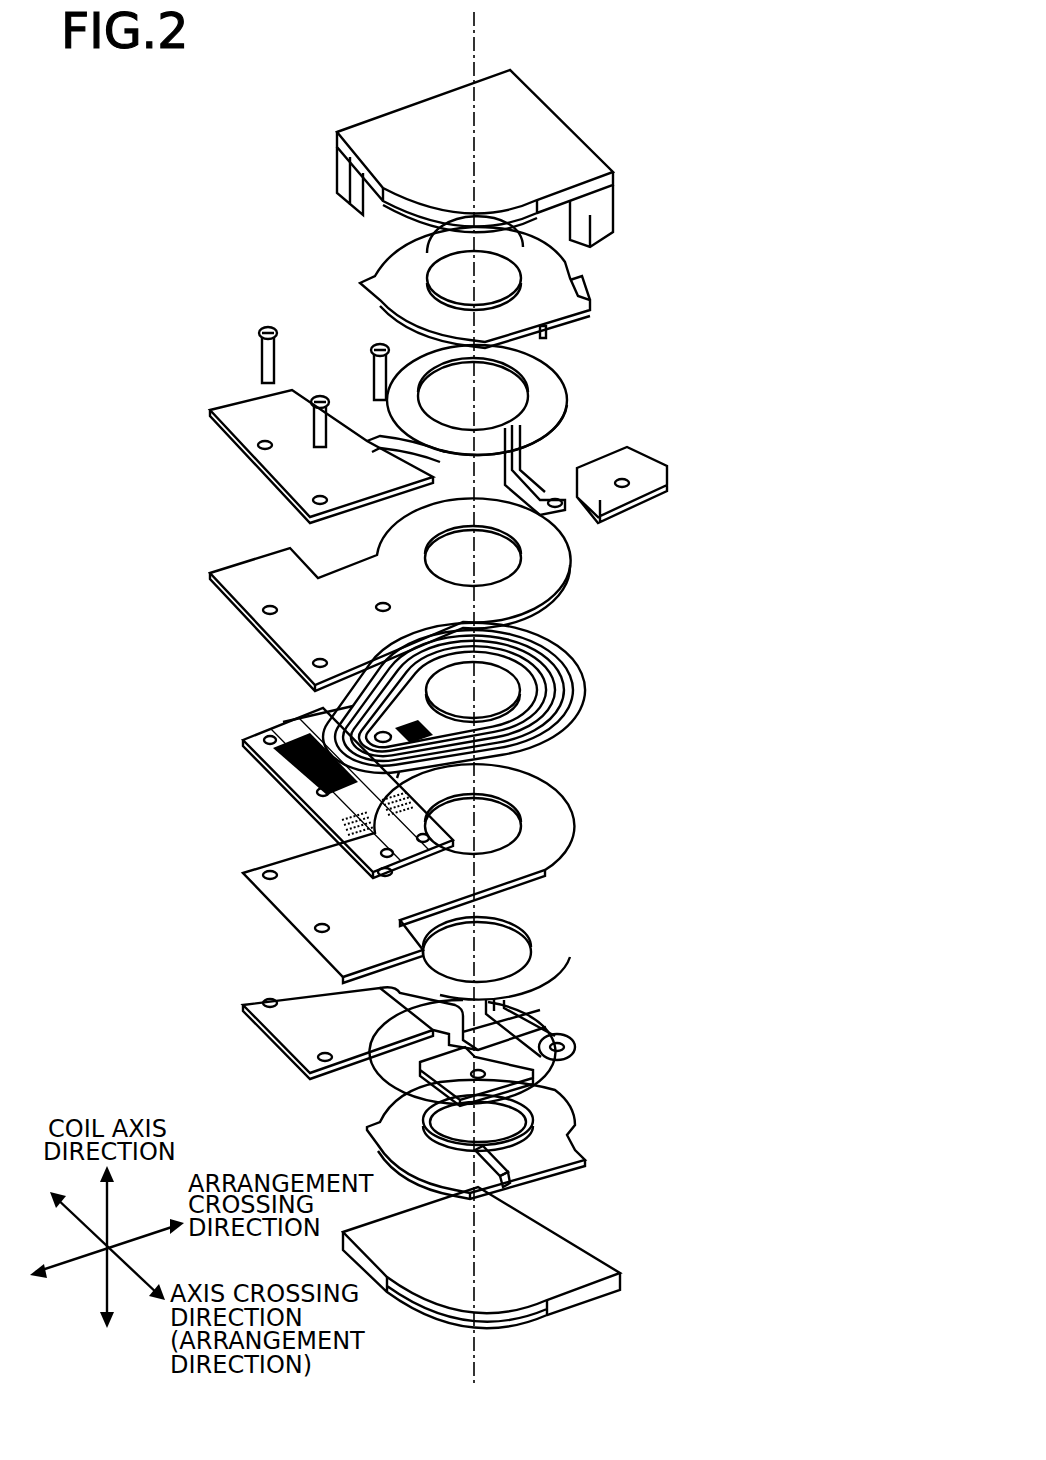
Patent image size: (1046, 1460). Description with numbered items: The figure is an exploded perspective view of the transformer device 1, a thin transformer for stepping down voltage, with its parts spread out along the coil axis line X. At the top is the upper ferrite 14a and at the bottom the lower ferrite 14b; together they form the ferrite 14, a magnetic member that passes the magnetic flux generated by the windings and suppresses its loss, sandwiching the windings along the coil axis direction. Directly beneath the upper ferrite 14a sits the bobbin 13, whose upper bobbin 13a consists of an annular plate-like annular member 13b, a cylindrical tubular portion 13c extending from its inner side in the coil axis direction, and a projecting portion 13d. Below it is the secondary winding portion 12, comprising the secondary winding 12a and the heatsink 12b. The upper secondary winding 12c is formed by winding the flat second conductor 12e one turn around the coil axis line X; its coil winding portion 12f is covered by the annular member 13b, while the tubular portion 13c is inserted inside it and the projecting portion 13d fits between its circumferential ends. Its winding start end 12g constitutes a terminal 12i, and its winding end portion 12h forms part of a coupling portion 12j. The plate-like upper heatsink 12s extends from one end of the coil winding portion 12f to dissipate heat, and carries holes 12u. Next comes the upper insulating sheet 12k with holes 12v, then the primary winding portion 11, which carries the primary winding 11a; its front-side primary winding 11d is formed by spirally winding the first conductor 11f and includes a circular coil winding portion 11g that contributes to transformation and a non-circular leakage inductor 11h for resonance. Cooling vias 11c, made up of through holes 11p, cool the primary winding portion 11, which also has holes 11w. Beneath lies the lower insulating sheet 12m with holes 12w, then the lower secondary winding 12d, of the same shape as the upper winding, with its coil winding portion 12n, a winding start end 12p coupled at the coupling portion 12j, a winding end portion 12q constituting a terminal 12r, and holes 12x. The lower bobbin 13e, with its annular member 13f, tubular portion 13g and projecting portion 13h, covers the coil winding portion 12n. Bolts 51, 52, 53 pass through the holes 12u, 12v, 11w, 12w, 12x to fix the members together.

The transformer device 1 is at (380, 70).
The coil axis line X is at (478, 44).
The upper ferrite 14a is at (501, 158).
The ferrite 14 is at (545, 125).
The upper bobbin 13a is at (522, 282).
The bobbin 13 is at (522, 282).
The tubular portion 13c is at (430, 262).
The annular member 13b is at (562, 280).
The projecting portion 13d is at (550, 333).
The bolt 51 is at (268, 326).
The bolt 52 is at (320, 395).
The bolt 53 is at (376, 345).
The secondary winding 12a is at (473, 441).
The secondary winding portion 12 is at (473, 441).
The second conductor 12e is at (473, 441).
The upper secondary winding 12c is at (557, 400).
The coil winding portion 12f is at (563, 373).
The upper heatsink 12s is at (296, 445).
The heatsink 12b is at (296, 445).
The holes 12u is at (375, 438).
The winding end portion 12h is at (639, 462).
The terminal 12i is at (600, 447).
The winding start end 12g is at (645, 473).
The upper insulating sheet 12k is at (401, 594).
The holes 12v is at (383, 603).
The primary winding portion 11 is at (470, 741).
The coil winding portion 11g is at (556, 698).
The front-side primary winding 11d is at (556, 698).
The primary winding 11a is at (556, 698).
The first conductor 11f is at (577, 670).
The leakage inductor 11h is at (434, 750).
The cooling vias 11c is at (308, 778).
The through holes 11p is at (308, 778).
The holes 11w is at (376, 737).
The lower insulating sheet 12m is at (415, 873).
The holes 12w is at (276, 924).
The lower secondary winding 12d is at (486, 1004).
The coil winding portion 12n is at (553, 950).
The winding start end 12p is at (598, 1022).
The coupling portion 12j is at (550, 1042).
The holes 12x is at (263, 1005).
The winding end portion 12q is at (388, 1084).
The terminal 12r is at (420, 1068).
The lower bobbin 13e is at (568, 1145).
The annular member 13f is at (560, 1123).
The tubular portion 13g is at (507, 1160).
The projecting portion 13h is at (527, 1172).
The lower ferrite 14b is at (583, 1247).